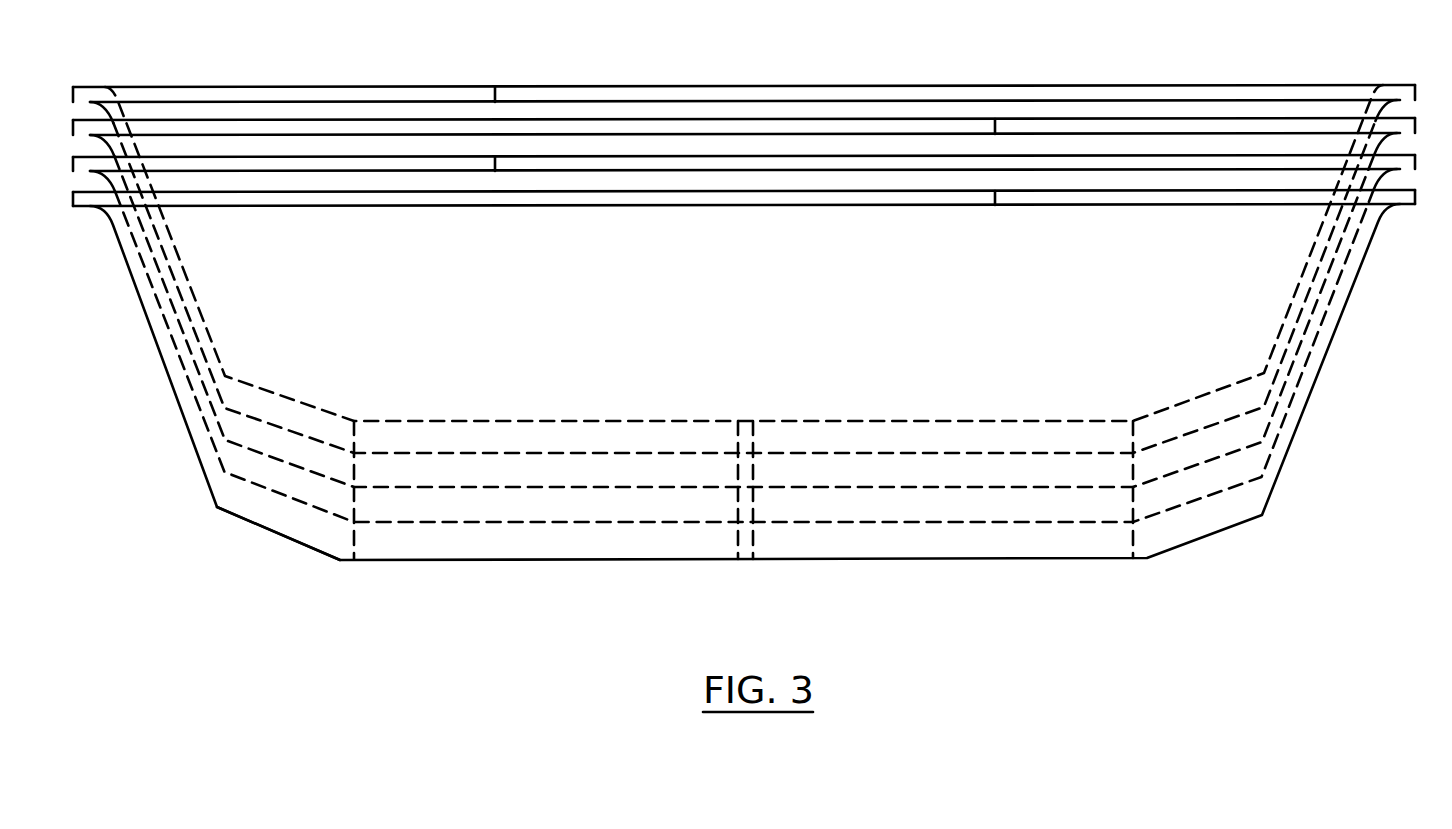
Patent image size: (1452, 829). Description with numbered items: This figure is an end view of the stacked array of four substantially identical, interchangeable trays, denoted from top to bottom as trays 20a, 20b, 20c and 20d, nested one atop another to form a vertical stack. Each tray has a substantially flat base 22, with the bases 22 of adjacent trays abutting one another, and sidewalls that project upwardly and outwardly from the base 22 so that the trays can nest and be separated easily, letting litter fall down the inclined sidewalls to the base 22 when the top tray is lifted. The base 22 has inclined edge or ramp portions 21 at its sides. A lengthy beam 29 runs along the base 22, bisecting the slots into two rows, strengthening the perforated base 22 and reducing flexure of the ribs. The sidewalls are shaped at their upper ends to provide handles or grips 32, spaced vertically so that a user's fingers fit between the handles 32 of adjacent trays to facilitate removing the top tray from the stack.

The handles or grips 32 is at (1031, 162).
The top tray 20a is at (1305, 288).
The second tray 20b is at (1307, 318).
The third tray 20c is at (1308, 350).
The bottom tray 20d is at (1315, 388).
The ramp portions 21 is at (290, 525).
The base 22 is at (1035, 421).
The beam 29 is at (748, 421).